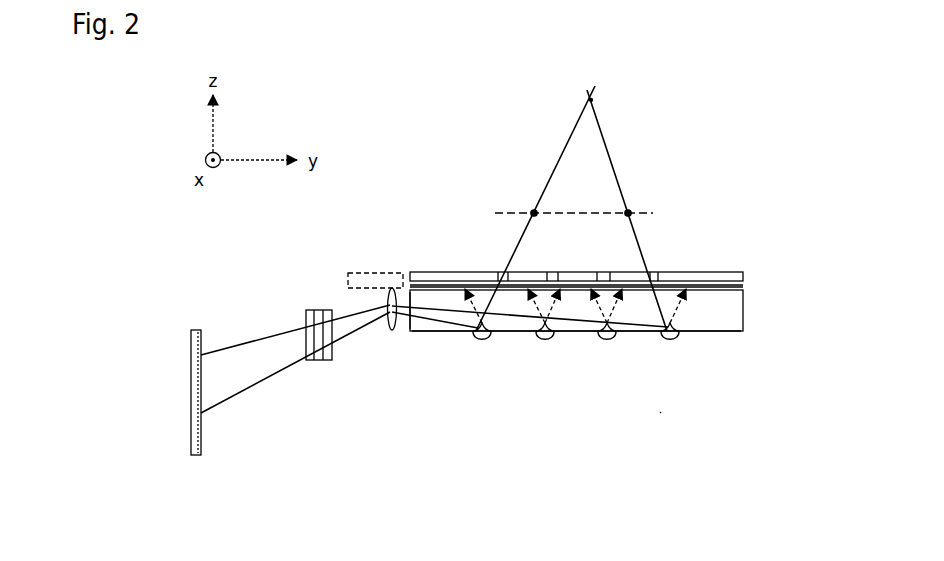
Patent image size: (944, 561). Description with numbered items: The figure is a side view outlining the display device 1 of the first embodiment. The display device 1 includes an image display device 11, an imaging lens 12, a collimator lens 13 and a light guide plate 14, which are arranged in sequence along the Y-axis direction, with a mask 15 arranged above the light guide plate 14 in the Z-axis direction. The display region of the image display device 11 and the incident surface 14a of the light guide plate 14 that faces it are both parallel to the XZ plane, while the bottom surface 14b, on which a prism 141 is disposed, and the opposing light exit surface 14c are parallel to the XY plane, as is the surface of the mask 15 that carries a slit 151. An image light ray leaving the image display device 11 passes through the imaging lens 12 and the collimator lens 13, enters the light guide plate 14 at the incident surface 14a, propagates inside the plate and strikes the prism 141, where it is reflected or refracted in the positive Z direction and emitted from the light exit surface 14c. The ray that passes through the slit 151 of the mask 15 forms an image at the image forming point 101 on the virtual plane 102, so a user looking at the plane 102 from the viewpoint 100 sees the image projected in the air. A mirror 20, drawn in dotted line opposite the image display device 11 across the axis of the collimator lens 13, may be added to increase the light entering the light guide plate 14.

The display device 1 is at (664, 416).
The image display device 11 is at (194, 455).
The imaging lens 12 is at (319, 360).
The collimator lens 13 is at (392, 330).
The light guide plate 14 is at (708, 322).
The incident surface 14a is at (409, 327).
The bottom surface 14b is at (727, 332).
The light exit surface 14c is at (728, 287).
The prism 141 is at (482, 341).
The mask 15 is at (723, 272).
The slit 151 is at (500, 272).
The mirror 20 is at (348, 280).
The viewpoint 100 is at (588, 100).
The image forming point 101 is at (532, 211).
The virtual plane 102 is at (655, 213).